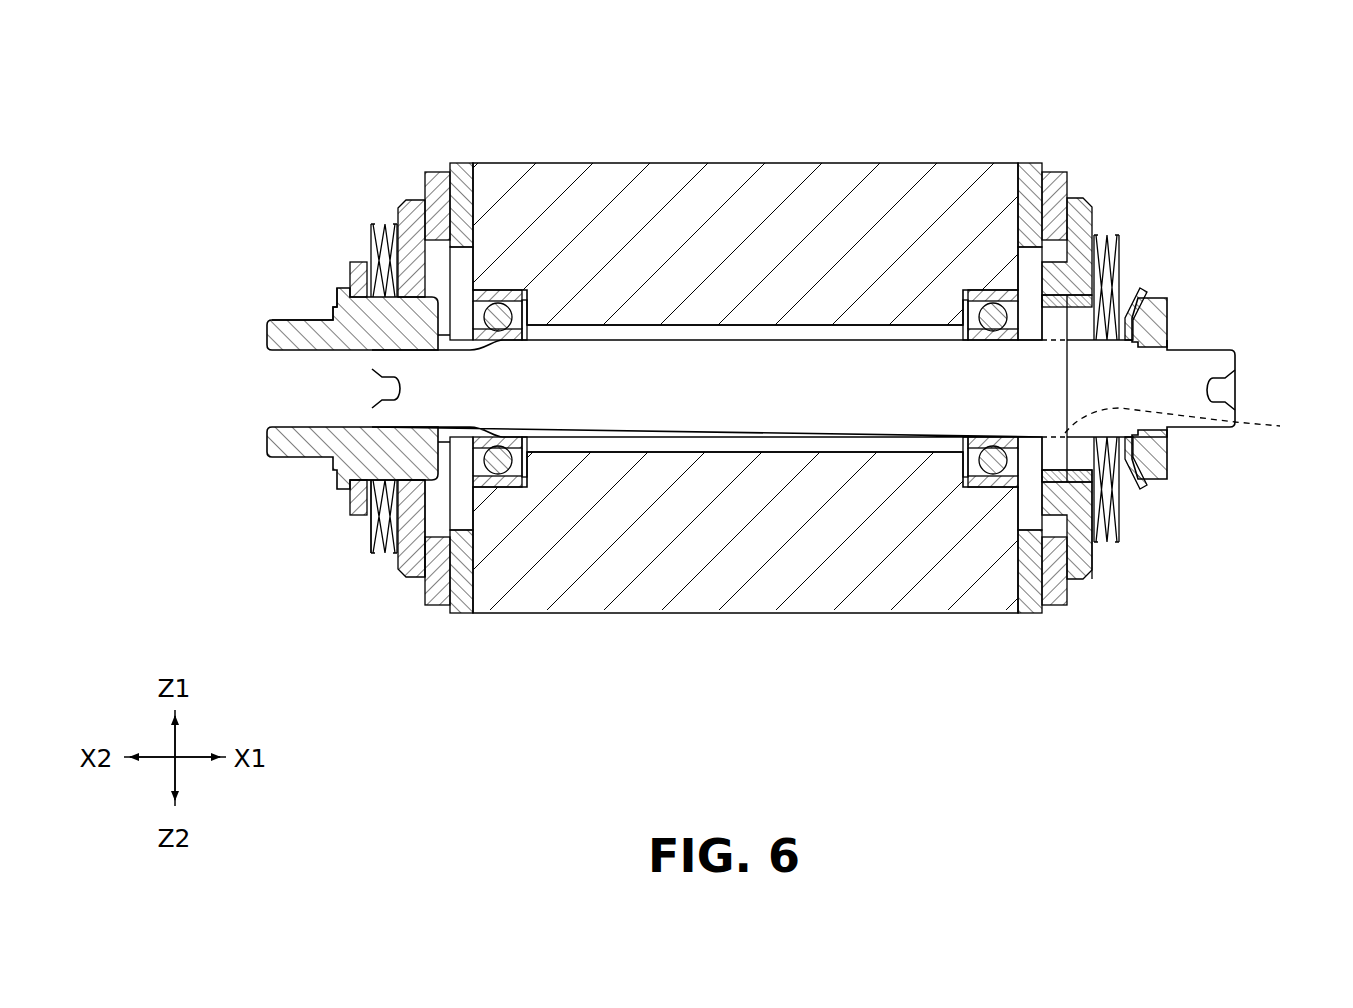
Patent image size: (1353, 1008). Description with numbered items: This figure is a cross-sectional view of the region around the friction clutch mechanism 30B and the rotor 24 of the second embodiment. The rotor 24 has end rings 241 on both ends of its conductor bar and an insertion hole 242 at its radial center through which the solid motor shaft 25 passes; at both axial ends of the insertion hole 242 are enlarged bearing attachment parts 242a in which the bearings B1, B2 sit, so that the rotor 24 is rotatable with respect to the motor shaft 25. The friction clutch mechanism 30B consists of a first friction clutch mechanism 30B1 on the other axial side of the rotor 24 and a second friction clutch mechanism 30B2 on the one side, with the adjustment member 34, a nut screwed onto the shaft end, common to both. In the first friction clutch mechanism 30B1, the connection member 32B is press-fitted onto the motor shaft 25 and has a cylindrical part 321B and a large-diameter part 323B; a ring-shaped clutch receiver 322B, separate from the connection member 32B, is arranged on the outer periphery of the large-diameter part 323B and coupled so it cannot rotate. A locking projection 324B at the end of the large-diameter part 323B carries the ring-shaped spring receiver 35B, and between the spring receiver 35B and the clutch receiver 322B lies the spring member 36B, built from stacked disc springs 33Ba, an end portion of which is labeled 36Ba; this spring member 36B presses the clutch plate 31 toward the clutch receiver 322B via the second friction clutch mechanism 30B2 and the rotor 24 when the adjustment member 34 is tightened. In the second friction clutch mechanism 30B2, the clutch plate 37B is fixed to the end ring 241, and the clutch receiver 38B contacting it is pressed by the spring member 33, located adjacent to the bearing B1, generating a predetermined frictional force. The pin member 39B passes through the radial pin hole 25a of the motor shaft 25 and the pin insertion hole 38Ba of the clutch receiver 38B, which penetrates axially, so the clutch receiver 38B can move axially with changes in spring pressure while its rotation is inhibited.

The rotor 24 is at (732, 182).
The end ring 241 is at (458, 165).
The insertion hole 242 is at (668, 440).
The bearing attachment part 242a is at (487, 487).
The motor shaft 25 is at (783, 412).
The pin hole 25a is at (1197, 425).
The clutch plate 31 is at (437, 172).
The connection member 32B is at (278, 337).
The cylindrical part 321B is at (295, 317).
The clutch receiver 322B is at (412, 578).
The large-diameter part 323B is at (385, 305).
The locking projection 324B is at (360, 262).
The friction clutch mechanism 30B is at (741, 574).
The first friction clutch mechanism 30B1 is at (360, 572).
The second friction clutch mechanism 30B2 is at (1107, 563).
The spring member 33 is at (1179, 421).
The disc spring 33Ba is at (1120, 507).
The adjustment member 34 is at (1165, 325).
The spring receiver 35B is at (350, 500).
The spring member 36B is at (382, 555).
The spring end 36Ba is at (367, 545).
The clutch plate 37B is at (1053, 168).
The clutch receiver 38B is at (1083, 197).
The pin insertion hole 38Ba is at (1075, 290).
The pin member 39B is at (1062, 590).
The bearing B1 is at (983, 487).
The bearing B2 is at (510, 487).